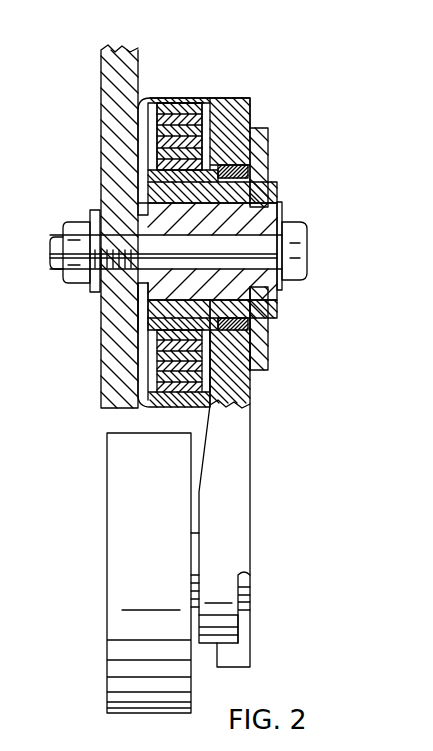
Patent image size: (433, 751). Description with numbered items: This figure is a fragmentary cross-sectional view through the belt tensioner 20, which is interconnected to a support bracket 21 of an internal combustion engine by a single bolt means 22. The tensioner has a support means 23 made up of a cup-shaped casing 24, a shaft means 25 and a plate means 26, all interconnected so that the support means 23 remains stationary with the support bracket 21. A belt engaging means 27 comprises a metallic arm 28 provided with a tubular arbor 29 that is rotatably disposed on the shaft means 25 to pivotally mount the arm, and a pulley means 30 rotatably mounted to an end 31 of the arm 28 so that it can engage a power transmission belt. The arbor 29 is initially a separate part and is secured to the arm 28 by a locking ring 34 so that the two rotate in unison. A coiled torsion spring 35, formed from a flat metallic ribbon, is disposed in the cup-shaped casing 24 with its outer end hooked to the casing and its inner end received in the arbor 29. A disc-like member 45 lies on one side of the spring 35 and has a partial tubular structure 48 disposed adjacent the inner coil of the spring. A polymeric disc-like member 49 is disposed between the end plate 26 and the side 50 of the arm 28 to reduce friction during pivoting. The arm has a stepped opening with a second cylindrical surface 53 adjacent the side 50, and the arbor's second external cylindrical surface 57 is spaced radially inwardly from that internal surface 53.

The belt tensioner 20 is at (272, 93).
The support bracket 21 is at (115, 106).
The bolt means 22 is at (235, 243).
The support means 23 is at (143, 148).
The cup-shaped casing 24 is at (143, 326).
The shaft means 25 is at (258, 278).
The plate means 26 is at (262, 174).
The belt engaging means 27 is at (240, 444).
The belt engaging arm 28 is at (242, 488).
The tubular arbor 29 is at (142, 294).
The pulley means 30 is at (127, 548).
The end of the belt engaging arm 31 is at (225, 592).
The locking ring 34 is at (240, 167).
The coiled torsion spring 35 is at (173, 110).
The disc-like member 45 is at (212, 110).
The partial tubular structure 48 is at (150, 183).
The disc-like member of polymeric material 49 is at (256, 371).
The side of the belt engaging arm 50 is at (250, 115).
The second cylindrical surface 53 is at (237, 325).
The second external cylindrical surface 57 is at (264, 347).